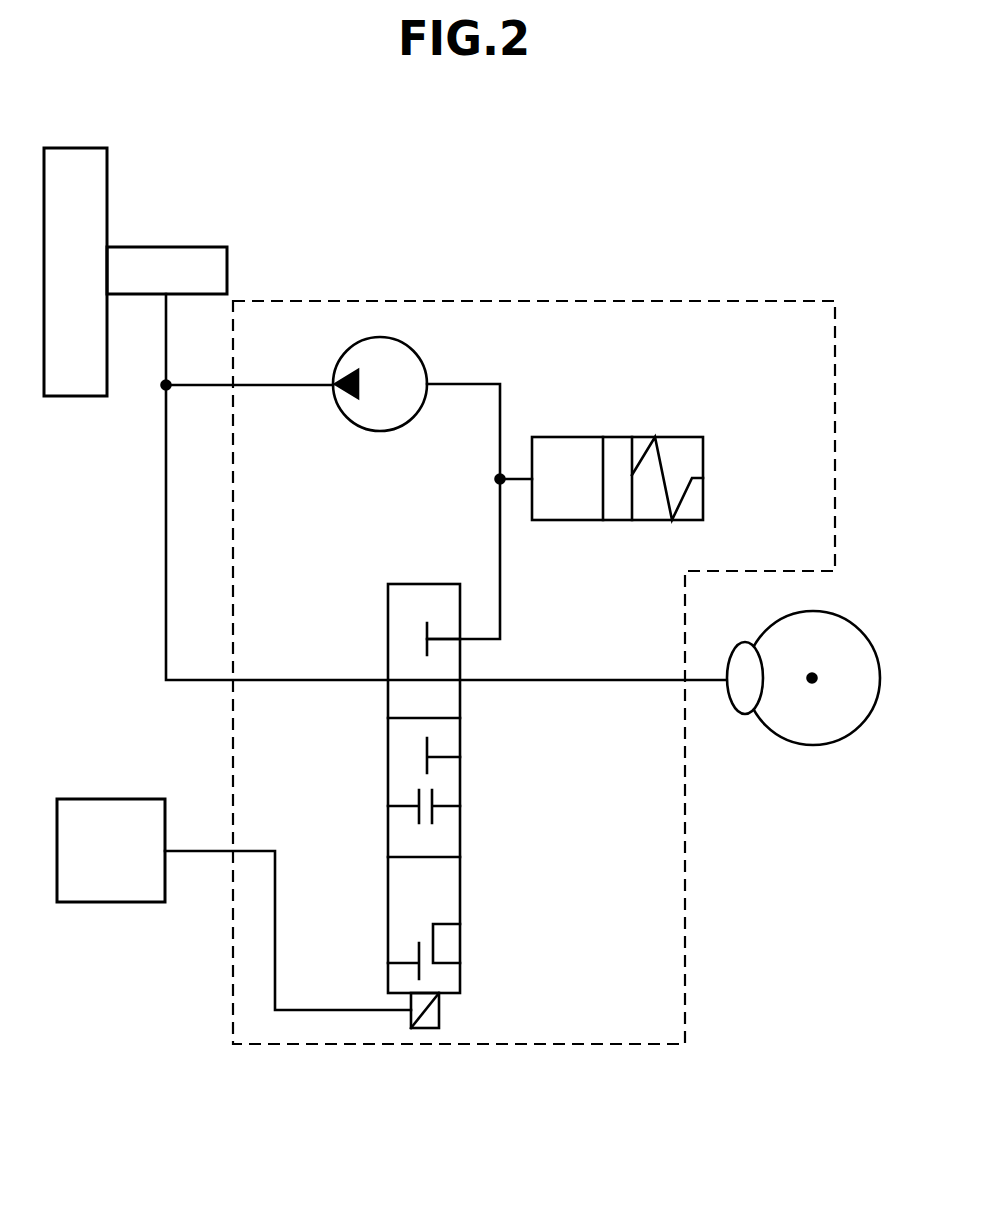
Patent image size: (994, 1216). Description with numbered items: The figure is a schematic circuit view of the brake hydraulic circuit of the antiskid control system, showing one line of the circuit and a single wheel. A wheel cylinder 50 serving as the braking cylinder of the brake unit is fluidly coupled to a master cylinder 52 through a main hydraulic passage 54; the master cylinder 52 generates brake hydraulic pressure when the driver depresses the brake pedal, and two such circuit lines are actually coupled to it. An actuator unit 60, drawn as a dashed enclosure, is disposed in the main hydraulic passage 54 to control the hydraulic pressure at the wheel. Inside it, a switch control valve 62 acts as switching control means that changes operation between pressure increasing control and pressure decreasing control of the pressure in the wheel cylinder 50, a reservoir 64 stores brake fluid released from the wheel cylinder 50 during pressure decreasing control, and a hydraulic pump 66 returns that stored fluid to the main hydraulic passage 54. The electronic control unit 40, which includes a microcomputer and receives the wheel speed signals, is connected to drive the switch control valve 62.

The electronic control unit 40 is at (110, 902).
The wheel cylinder 50 is at (738, 703).
The master cylinder 52 is at (227, 264).
The main hydraulic passage 54 is at (166, 525).
The actuator unit 60 is at (685, 873).
The switch control valve 62 is at (397, 625).
The reservoir 64 is at (693, 448).
The hydraulic pump 66 is at (388, 431).